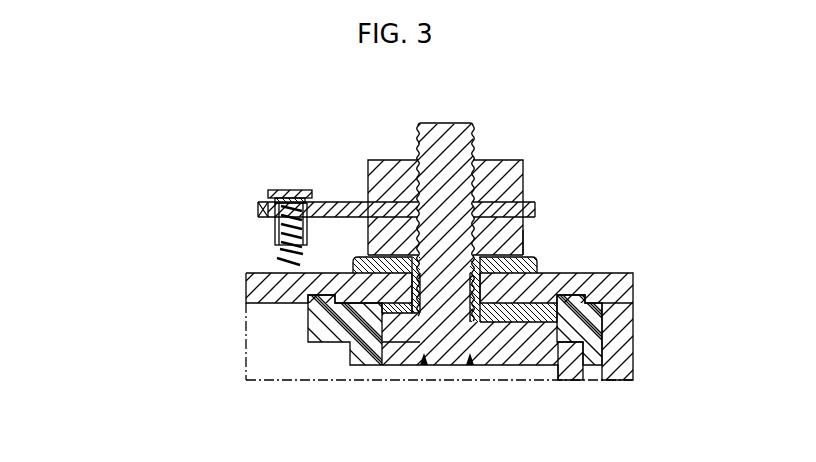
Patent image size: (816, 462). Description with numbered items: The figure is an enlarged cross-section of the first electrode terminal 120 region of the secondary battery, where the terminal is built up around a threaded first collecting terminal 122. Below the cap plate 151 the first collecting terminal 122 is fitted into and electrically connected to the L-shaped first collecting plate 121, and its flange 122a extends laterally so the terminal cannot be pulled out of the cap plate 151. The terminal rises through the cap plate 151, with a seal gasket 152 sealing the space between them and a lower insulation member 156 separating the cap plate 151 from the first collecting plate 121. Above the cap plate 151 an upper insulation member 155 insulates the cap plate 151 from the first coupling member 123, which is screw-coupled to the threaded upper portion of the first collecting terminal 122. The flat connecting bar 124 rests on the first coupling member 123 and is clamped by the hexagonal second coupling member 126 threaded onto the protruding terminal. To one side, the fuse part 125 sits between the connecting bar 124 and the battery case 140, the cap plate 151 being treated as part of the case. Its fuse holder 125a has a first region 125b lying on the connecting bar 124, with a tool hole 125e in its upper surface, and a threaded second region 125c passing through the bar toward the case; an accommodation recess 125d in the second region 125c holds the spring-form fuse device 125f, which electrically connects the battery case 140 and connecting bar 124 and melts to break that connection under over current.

The first electrode terminal 120 is at (393, 127).
The first collecting plate 121 is at (567, 373).
The first collecting terminal 122 is at (448, 128).
The flange 122a is at (499, 333).
The first coupling member 123 is at (525, 236).
The connecting bar 124 is at (535, 203).
The fuse part 125 is at (133, 180).
The fuse holder 125a is at (195, 147).
The first region 125b is at (270, 191).
The second region 125c is at (276, 228).
The accommodation recess 125d is at (268, 207).
The tool hole 125e is at (285, 190).
The fuse device 125f is at (279, 260).
The second coupling member 126 is at (497, 160).
The battery case 140 is at (626, 361).
The cap plate 151 is at (634, 288).
The seal gasket 152 is at (482, 292).
The upper insulation member 155 is at (540, 268).
The lower insulation member 156 is at (594, 325).